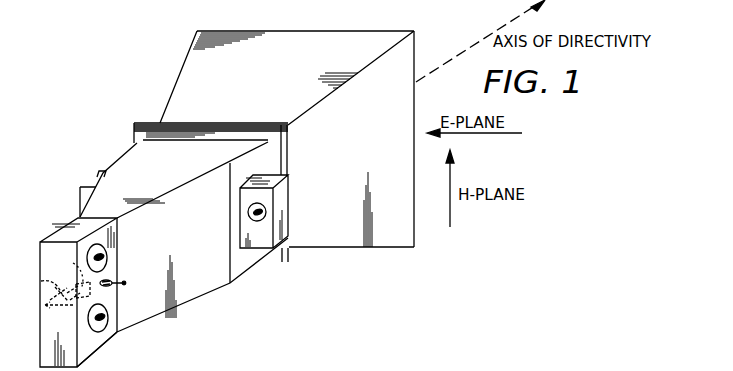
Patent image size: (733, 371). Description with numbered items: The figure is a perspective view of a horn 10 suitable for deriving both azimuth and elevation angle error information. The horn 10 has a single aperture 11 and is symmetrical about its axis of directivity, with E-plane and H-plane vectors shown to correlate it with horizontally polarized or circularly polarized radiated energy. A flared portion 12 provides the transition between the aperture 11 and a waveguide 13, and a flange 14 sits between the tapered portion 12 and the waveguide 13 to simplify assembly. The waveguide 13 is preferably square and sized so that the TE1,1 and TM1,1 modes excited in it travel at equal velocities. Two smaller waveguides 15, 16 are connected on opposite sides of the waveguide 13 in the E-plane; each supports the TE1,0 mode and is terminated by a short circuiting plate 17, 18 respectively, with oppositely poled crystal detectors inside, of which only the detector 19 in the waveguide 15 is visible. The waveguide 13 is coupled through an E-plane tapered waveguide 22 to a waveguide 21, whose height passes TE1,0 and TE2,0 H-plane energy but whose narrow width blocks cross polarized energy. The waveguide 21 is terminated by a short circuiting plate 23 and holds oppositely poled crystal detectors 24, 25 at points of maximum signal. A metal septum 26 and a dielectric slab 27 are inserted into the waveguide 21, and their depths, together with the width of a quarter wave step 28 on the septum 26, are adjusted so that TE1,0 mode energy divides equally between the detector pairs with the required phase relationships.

The horn 10 is at (276, 304).
The aperture 11 is at (416, 61).
The flared portion 12 is at (291, 40).
The waveguide 13 is at (127, 166).
The flange 14 is at (139, 123).
The smaller waveguide 15 is at (288, 174).
The smaller waveguide 16 is at (98, 181).
The short circuiting plate 17 is at (285, 206).
The short circuiting plate 18 is at (80, 204).
The detector 19 is at (263, 218).
The waveguide 21 is at (93, 346).
The waveguide 22 is at (184, 205).
The short circuiting plate 23 is at (47, 333).
The crystal detector 24 is at (103, 257).
The crystal detector 25 is at (107, 315).
The metal septum 26 is at (41, 282).
The dielectric slab 27 is at (124, 283).
The quarter wave step 28 is at (73, 263).